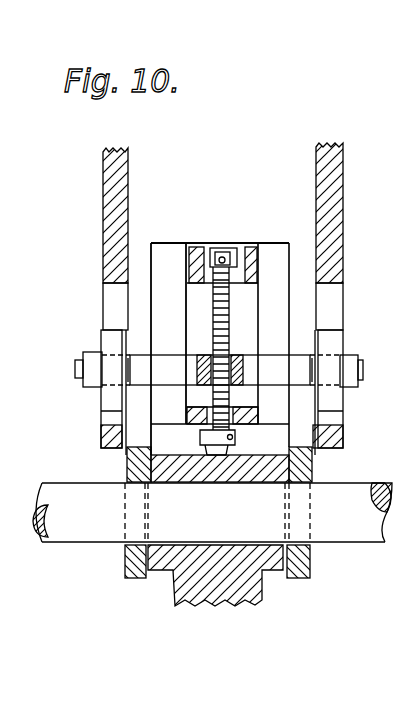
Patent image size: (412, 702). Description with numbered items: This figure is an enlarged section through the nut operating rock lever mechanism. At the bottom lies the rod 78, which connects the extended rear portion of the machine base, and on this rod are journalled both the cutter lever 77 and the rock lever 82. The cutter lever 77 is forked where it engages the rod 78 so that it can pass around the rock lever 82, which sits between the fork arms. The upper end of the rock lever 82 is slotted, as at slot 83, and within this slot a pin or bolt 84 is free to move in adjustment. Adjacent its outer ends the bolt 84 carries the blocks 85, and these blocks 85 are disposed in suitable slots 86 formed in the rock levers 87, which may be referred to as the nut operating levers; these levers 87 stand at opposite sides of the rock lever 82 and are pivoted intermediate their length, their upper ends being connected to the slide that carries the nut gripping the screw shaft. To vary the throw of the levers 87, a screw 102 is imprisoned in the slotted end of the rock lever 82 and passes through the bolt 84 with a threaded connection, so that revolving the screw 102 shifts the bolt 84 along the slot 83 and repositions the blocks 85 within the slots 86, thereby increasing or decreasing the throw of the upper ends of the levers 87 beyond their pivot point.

The cutter lever 77 is at (123, 565).
The rod 78 is at (340, 540).
The rock lever 82 is at (262, 597).
The slot 83 is at (168, 260).
The pin or bolt 84 is at (268, 368).
The blocks 85 is at (325, 340).
The slots 86 is at (330, 297).
The rock levers 87 is at (123, 173).
The screw 102 is at (229, 298).